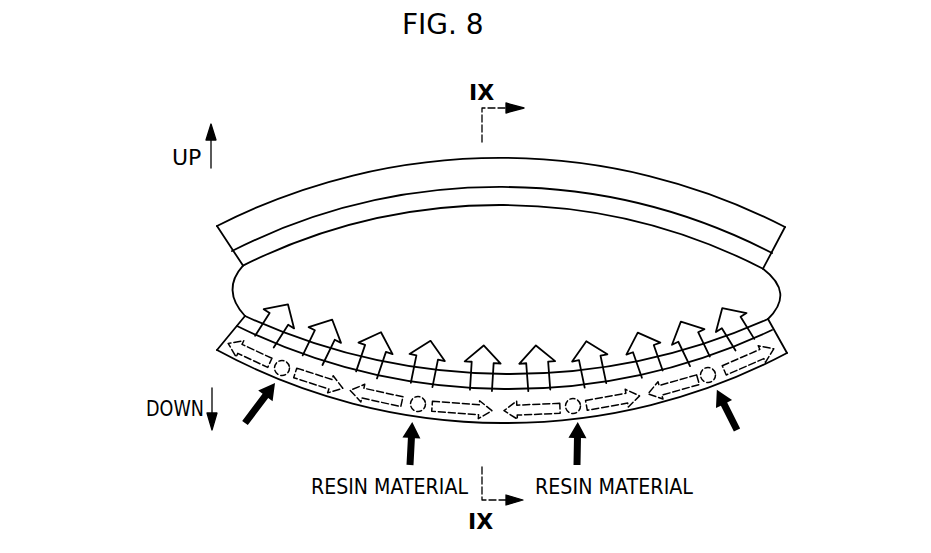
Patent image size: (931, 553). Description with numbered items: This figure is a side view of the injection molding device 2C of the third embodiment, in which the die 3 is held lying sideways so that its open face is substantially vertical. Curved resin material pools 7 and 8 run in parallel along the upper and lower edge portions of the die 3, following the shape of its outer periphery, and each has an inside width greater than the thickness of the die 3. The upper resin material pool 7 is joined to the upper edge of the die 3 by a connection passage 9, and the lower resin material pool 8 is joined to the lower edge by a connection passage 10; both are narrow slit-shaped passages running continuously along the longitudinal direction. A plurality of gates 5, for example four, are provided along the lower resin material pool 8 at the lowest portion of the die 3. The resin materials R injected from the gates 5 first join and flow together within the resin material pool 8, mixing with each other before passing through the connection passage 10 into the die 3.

The injection molding device 2C is at (134, 208).
The die 3 is at (368, 243).
The resin material pool 7 is at (252, 223).
The connection passage 9 is at (241, 262).
The connection passage 10 is at (243, 318).
The resin material pool 8 is at (215, 348).
The gate 5 is at (284, 376).
The resin material R is at (330, 327).